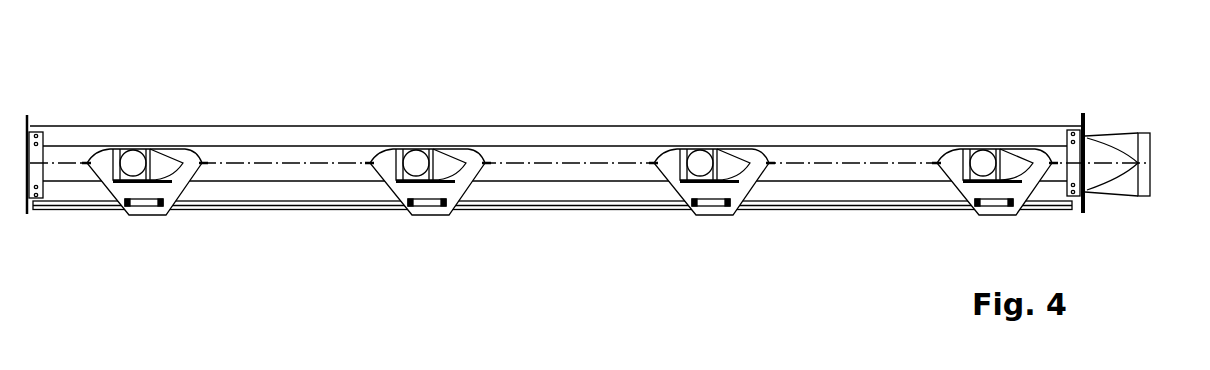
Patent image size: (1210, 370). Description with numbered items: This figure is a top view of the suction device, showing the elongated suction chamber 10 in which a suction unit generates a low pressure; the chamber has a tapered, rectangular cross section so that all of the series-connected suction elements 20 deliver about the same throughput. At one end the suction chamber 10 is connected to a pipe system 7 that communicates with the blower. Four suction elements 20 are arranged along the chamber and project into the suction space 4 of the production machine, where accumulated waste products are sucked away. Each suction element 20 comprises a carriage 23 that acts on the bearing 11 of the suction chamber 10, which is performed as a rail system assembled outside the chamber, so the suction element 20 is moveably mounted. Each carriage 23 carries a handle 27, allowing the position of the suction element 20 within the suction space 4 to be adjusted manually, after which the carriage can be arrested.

The suction space 4 is at (568, 288).
The pipe system 7 is at (1143, 145).
The suction chamber 10 is at (572, 140).
The bearing 11 is at (408, 212).
The suction element 20 is at (134, 160).
The carriage 23 is at (176, 188).
The handle 27 is at (137, 206).